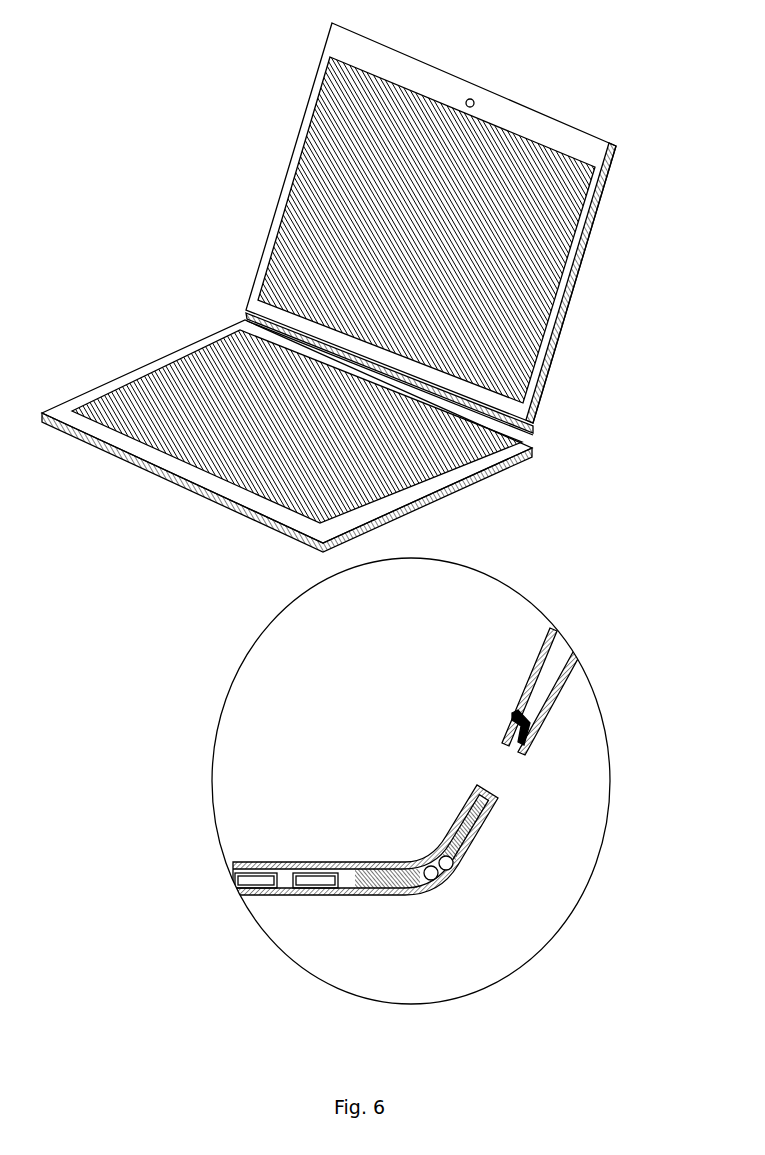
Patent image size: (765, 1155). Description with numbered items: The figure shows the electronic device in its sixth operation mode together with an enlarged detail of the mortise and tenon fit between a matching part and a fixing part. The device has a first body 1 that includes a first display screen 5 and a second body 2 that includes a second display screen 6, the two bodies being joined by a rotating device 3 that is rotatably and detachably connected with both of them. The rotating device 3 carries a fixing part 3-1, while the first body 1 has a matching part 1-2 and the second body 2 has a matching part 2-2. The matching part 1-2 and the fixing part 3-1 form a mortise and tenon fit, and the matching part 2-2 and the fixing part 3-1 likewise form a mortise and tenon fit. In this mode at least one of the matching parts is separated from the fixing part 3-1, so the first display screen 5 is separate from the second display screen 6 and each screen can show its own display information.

The first body 1 is at (615, 148).
The matching part of the first body 1-2 is at (532, 745).
The second body 2 is at (198, 347).
The matching part of the second body 2-2 is at (377, 893).
The rotating device 3 is at (448, 880).
The fixing part 3-1 is at (385, 862).
The first display screen 5 is at (555, 312).
The second display screen 6 is at (137, 405).